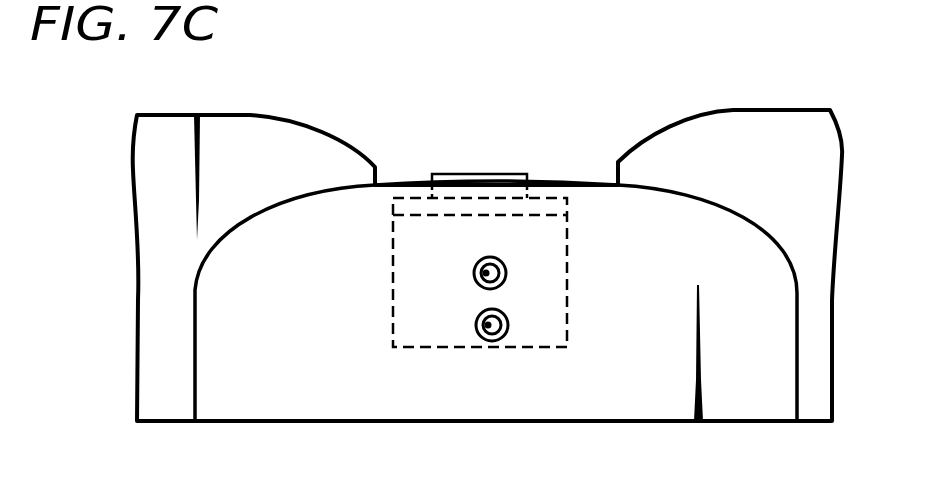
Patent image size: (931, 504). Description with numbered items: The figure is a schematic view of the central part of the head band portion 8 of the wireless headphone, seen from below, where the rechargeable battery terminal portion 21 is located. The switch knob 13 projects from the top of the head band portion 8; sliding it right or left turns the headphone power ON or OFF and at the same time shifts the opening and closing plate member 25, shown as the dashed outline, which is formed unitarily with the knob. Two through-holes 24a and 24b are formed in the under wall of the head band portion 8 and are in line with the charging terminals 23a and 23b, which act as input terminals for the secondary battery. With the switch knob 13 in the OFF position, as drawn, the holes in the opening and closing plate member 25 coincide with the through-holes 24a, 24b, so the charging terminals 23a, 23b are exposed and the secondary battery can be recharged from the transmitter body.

The head band portion 8 is at (228, 115).
The switch knob 13 is at (478, 172).
The rechargeable battery terminal portion 21 is at (482, 333).
The charging terminal 23a is at (508, 322).
The charging terminal 23b is at (507, 268).
The through-hole 24a is at (476, 327).
The through-hole 24b is at (473, 275).
The opening and closing plate member 25 is at (437, 349).